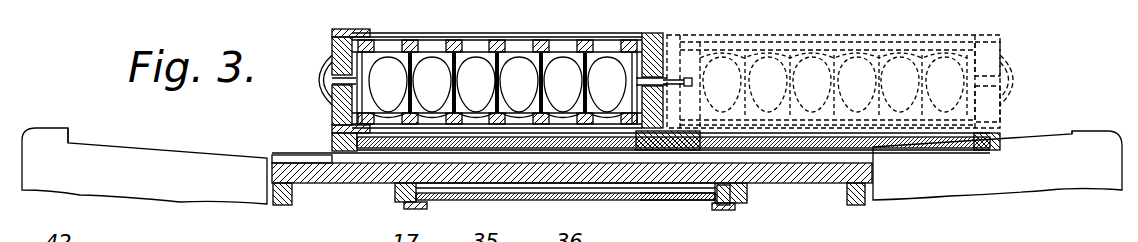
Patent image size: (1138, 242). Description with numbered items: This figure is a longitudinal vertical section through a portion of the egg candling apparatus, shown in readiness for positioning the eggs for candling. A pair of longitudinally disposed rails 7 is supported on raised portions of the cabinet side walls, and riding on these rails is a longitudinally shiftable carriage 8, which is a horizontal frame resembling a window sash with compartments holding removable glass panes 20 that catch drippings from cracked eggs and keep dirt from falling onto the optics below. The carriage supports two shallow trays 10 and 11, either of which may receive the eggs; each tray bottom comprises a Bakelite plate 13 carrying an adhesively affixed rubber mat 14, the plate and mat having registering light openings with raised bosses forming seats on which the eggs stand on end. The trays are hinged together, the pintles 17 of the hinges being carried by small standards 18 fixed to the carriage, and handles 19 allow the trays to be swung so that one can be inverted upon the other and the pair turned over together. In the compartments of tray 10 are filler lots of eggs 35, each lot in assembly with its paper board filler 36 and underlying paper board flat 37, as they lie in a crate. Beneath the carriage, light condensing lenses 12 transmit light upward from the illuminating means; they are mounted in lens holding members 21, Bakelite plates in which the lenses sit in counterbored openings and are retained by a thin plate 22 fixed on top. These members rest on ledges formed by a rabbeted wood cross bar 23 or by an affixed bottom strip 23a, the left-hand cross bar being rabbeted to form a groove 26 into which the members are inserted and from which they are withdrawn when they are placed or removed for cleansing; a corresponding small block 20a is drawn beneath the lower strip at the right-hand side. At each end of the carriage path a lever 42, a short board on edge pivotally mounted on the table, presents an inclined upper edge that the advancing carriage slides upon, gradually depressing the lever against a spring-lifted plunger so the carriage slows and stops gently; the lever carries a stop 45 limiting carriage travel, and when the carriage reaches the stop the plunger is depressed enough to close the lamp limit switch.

The rails 7 is at (278, 160).
The carriage 8 is at (1000, 148).
The tray 10 is at (330, 100).
The tray 11 is at (330, 66).
The light condensing lenses 12 is at (588, 194).
The plate 13 is at (332, 41).
The rubber mat 14 is at (376, 48).
The pintles 17 is at (666, 78).
The standards 18 is at (695, 83).
The handles 19 is at (312, 88).
The glass panes 20 is at (332, 142).
The support block 20a is at (734, 209).
The lens holding members 21 is at (716, 204).
The thin plate 22 is at (664, 194).
The cross bar 23 is at (395, 192).
The bottom strip 23a is at (405, 207).
The groove 26 is at (420, 190).
The eggs 35 is at (476, 66).
The paper board filler 36 is at (553, 58).
The paper board flat 37 is at (372, 110).
The lever 42 is at (168, 183).
The stop 45 is at (70, 131).